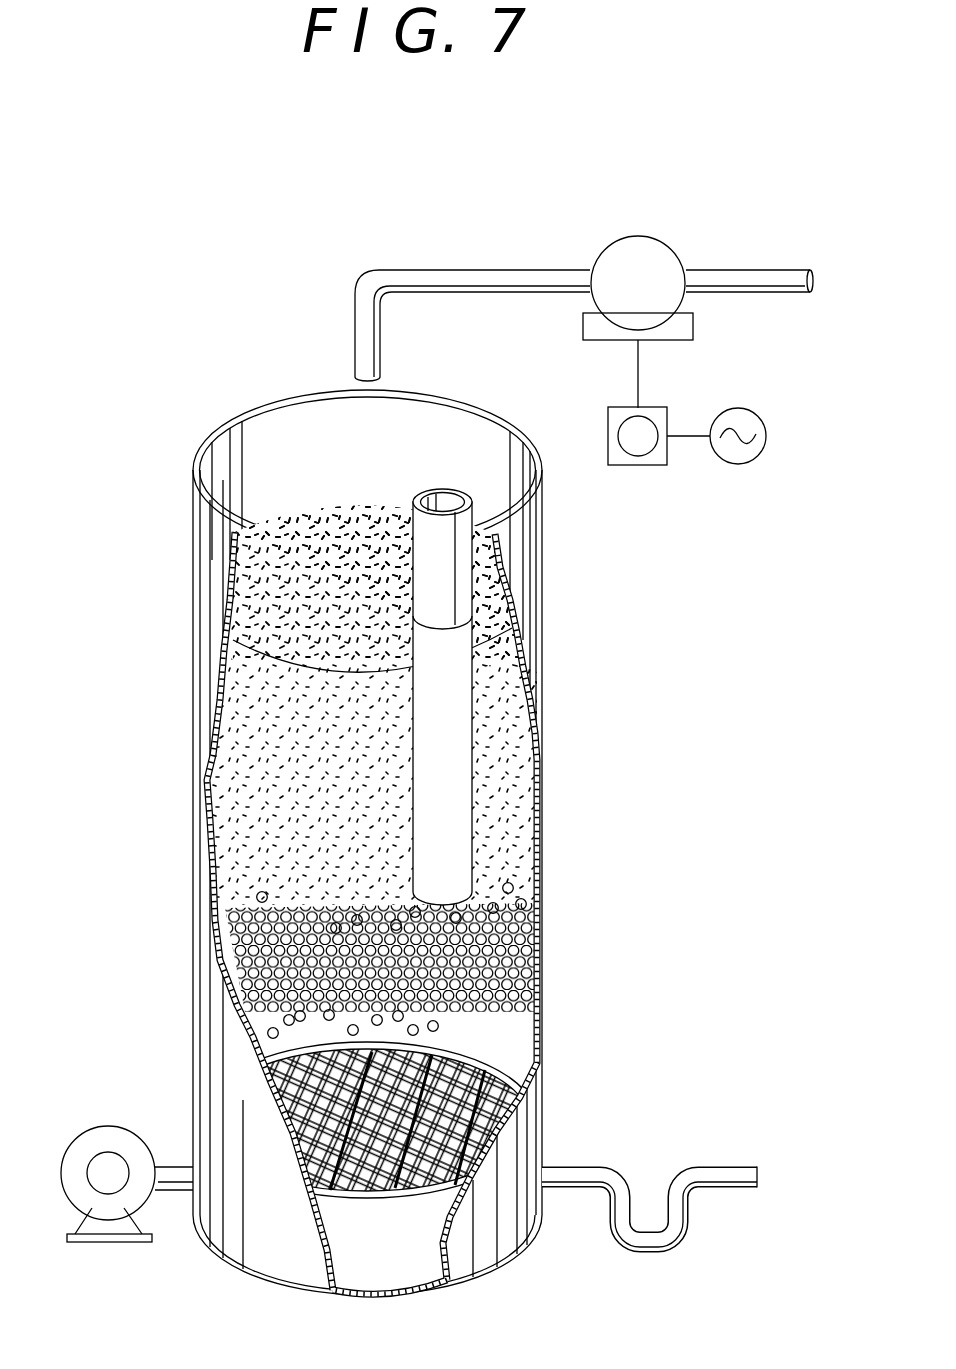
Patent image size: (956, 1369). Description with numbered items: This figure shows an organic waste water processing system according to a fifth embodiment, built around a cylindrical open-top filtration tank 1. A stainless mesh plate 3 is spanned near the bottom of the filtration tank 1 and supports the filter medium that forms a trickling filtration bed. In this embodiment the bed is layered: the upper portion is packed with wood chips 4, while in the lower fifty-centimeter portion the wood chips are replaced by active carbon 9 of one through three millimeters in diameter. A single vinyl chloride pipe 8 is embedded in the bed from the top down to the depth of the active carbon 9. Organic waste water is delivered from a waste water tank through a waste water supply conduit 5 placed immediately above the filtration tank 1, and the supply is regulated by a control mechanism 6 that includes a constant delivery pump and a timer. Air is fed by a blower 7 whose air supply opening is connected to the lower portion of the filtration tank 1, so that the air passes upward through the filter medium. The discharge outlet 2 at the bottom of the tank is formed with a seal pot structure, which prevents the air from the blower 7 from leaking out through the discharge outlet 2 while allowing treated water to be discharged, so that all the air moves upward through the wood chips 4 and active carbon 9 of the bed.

The filtration tank 1 is at (517, 571).
The discharge outlet 2 is at (612, 1175).
The stainless mesh plate 3 is at (487, 1068).
The wood chips 4 is at (498, 815).
The waste water supply conduit 5 is at (362, 308).
The control mechanism 6 is at (704, 374).
The blower 7 is at (110, 1135).
The vinyl chloride pipe 8 is at (467, 713).
The active carbon 9 is at (522, 922).